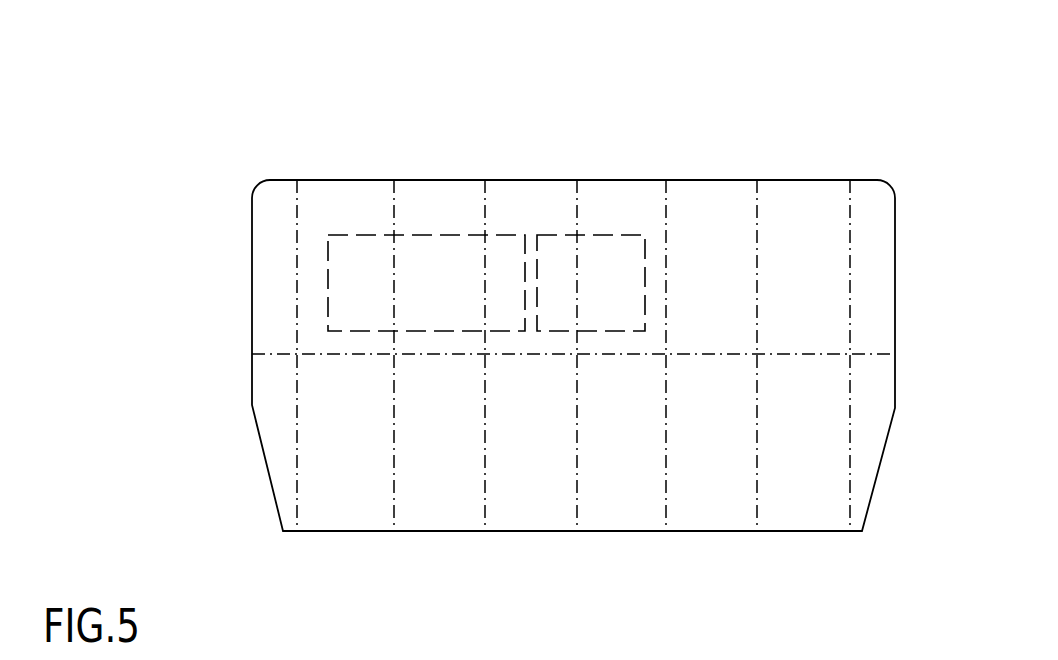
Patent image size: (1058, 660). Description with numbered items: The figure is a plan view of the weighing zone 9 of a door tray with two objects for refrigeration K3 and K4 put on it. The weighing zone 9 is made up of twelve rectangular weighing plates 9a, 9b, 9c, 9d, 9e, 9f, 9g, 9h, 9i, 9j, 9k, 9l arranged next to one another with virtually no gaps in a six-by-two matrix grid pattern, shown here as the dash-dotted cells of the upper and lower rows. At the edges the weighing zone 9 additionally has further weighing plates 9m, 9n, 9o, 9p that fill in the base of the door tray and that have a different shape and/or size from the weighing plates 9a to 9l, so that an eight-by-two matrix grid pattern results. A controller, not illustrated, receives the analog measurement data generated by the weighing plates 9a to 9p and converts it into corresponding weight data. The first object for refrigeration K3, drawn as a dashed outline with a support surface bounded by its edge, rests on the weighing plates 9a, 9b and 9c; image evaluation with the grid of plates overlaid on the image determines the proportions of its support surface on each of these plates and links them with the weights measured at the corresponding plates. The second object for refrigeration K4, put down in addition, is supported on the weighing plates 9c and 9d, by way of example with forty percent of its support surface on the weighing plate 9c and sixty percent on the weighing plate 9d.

The weighing zone 9 is at (180, 172).
The weighing plate 9a is at (343, 198).
The weighing plate 9b is at (433, 198).
The weighing plate 9c is at (550, 198).
The weighing plate 9d is at (627, 198).
The weighing plate 9e is at (704, 198).
The weighing plate 9f is at (808, 198).
The weighing plate 9g is at (344, 508).
The weighing plate 9h is at (447, 508).
The weighing plate 9i is at (530, 508).
The weighing plate 9j is at (625, 508).
The weighing plate 9k is at (716, 508).
The weighing plate 9l is at (807, 508).
The further weighing plate 9m is at (268, 321).
The further weighing plate 9n is at (277, 425).
The further weighing plate 9o is at (877, 198).
The further weighing plate 9p is at (865, 407).
The object for refrigeration K3 is at (328, 282).
The object for refrigeration K4 is at (642, 277).